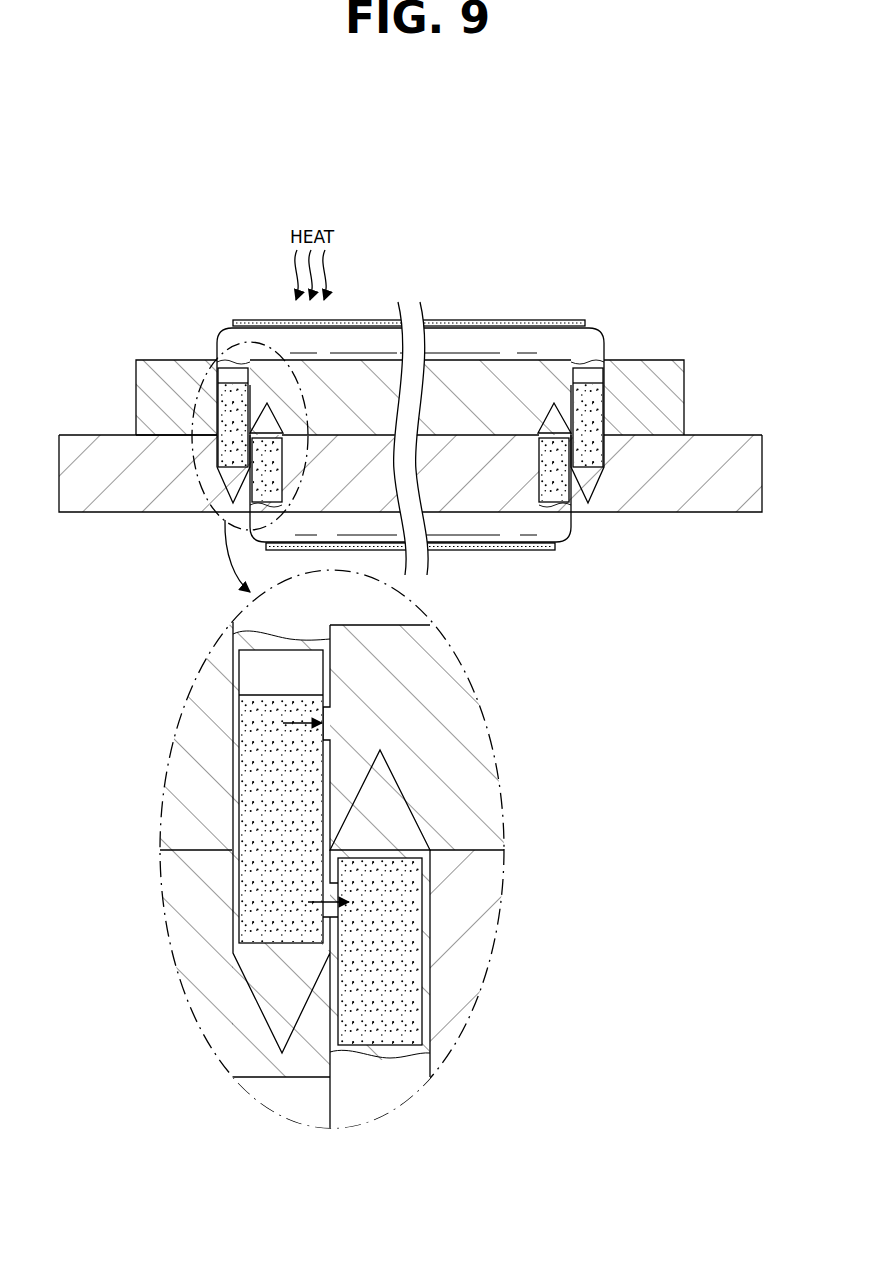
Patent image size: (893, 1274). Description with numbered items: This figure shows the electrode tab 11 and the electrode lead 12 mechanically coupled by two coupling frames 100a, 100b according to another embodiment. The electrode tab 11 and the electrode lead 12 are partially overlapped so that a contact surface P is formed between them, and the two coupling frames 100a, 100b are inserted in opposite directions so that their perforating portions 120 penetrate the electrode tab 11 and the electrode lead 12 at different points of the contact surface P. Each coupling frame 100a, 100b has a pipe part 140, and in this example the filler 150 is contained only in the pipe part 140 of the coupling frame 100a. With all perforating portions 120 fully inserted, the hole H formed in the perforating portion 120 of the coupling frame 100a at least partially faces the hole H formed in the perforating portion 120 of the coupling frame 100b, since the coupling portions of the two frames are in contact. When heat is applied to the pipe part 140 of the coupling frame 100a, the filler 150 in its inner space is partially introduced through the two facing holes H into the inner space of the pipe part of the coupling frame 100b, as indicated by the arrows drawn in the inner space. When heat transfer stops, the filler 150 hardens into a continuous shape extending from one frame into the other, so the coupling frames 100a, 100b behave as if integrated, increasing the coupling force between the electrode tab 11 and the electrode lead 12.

The electrode lead 12 is at (728, 435).
The electrode tab 11 is at (647, 360).
The contact surface P is at (178, 433).
The coupling frame 100a is at (446, 263).
The coupling frame 100b is at (483, 569).
The perforating portion 120 is at (217, 360).
The pipe part 140 is at (257, 640).
The filler 150 is at (265, 807).
The hole H is at (327, 715).